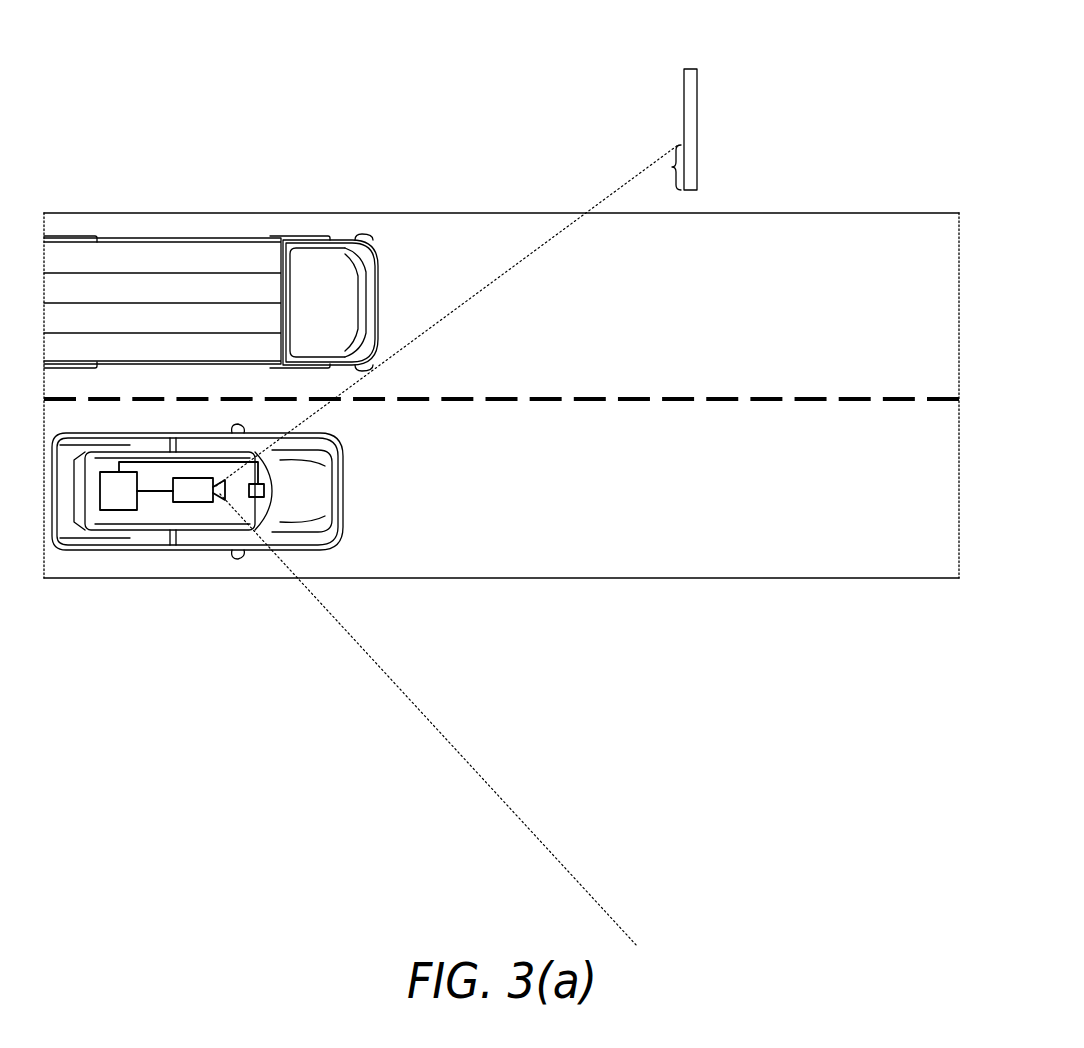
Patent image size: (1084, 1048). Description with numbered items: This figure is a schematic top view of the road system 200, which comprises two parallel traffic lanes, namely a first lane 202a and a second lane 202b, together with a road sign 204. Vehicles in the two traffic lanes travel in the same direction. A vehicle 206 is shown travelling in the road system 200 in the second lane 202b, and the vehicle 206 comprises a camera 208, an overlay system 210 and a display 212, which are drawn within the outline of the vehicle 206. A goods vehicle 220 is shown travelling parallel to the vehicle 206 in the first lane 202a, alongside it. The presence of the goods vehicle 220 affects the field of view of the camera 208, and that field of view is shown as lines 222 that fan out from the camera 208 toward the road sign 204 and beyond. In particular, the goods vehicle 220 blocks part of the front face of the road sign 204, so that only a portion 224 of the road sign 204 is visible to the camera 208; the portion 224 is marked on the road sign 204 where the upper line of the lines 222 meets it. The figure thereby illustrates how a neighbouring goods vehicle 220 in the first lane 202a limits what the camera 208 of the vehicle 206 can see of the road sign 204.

The road system 200 is at (218, 61).
The first lane 202a is at (808, 327).
The second lane 202b is at (808, 499).
The road sign 204 is at (687, 69).
The vehicle 206 is at (343, 493).
The camera 208 is at (196, 502).
The overlay system 210 is at (111, 510).
The display 212 is at (264, 495).
The goods vehicle 220 is at (378, 258).
The lines 222 is at (606, 195).
The portion 224 is at (672, 167).